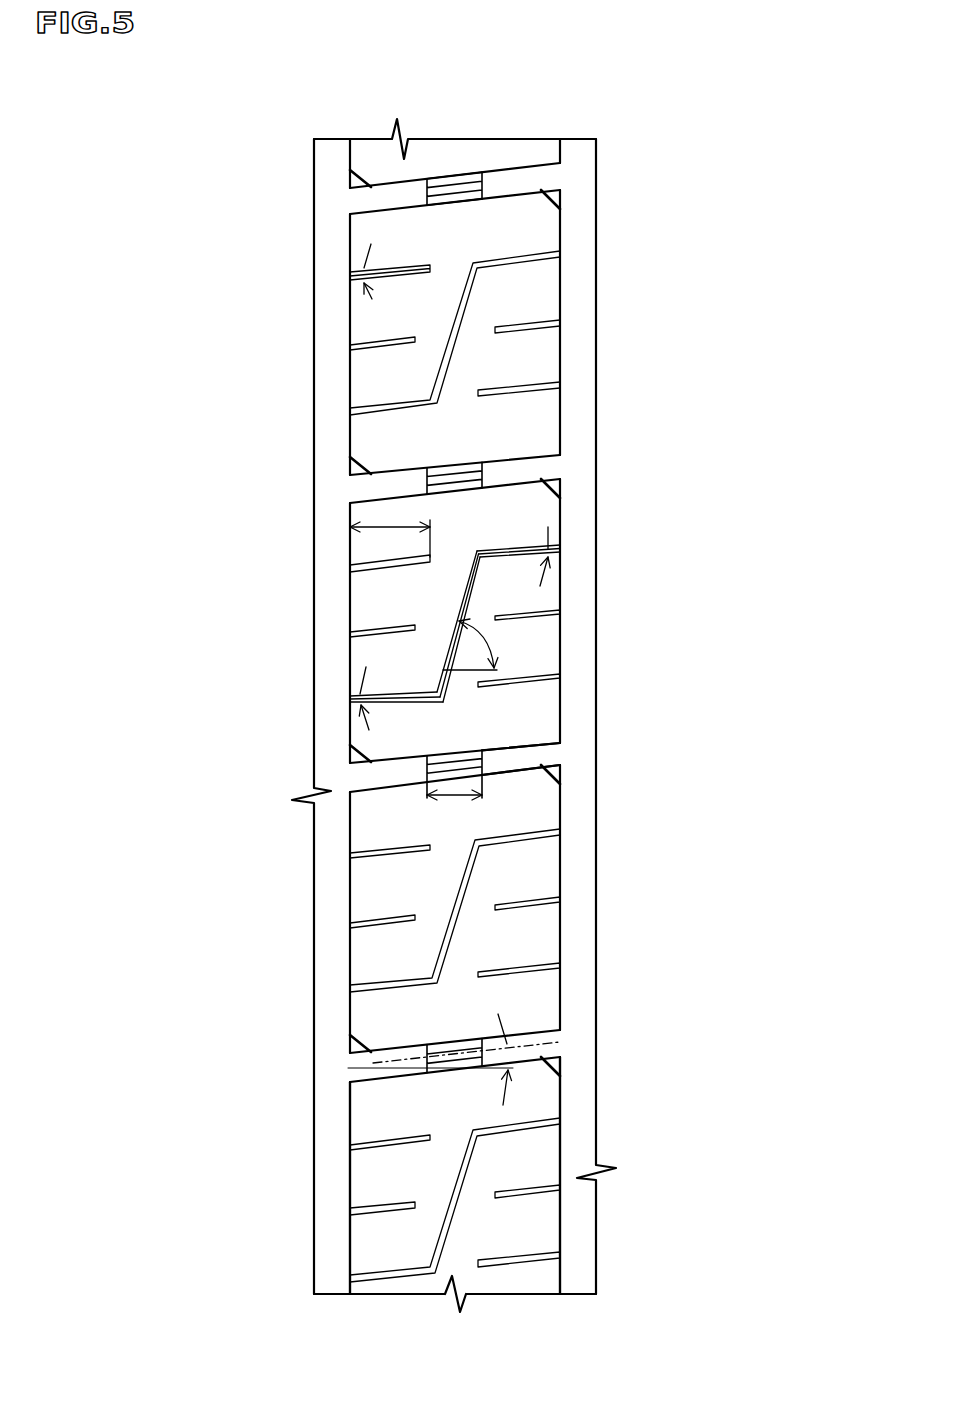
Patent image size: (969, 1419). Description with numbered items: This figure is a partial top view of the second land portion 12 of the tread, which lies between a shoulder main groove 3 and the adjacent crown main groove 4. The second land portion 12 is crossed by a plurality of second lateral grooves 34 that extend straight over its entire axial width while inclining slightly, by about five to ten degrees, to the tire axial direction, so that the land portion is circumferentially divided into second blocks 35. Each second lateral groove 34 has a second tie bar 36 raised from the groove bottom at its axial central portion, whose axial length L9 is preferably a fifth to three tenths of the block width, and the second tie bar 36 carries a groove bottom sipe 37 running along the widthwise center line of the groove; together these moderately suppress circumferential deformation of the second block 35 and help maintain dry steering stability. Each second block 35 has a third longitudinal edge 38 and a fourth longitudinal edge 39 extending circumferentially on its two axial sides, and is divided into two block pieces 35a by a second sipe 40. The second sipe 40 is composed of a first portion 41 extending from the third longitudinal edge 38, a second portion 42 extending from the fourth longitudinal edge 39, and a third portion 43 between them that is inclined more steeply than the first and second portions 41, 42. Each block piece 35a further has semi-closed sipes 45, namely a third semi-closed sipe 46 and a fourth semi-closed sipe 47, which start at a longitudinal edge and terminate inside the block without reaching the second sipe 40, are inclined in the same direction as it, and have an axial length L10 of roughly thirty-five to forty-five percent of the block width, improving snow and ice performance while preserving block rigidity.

The shoulder main groove 3 is at (330, 181).
The crown main groove 4 is at (580, 181).
The second land portion 12 is at (452, 233).
The second lateral groove 34 is at (513, 184).
The second block 35 is at (484, 307).
The block piece 35a is at (388, 370).
The second tie bar 36 is at (462, 756).
The groove bottom sipe 37 is at (497, 771).
The third longitudinal edge 38 is at (349, 1167).
The fourth longitudinal edge 39 is at (561, 1225).
The second sipe 40 is at (680, 855).
The first portion 41 is at (412, 694).
The second portion 42 is at (513, 547).
The third portion 43 is at (470, 597).
The semi-closed sipe 45 is at (399, 283).
The third semi-closed sipe 46 is at (381, 565).
The fourth semi-closed sipe 47 is at (378, 628).
The axial length of the second tie bar L9 is at (457, 797).
The axial length of the semi-closed sipe L10 is at (393, 527).